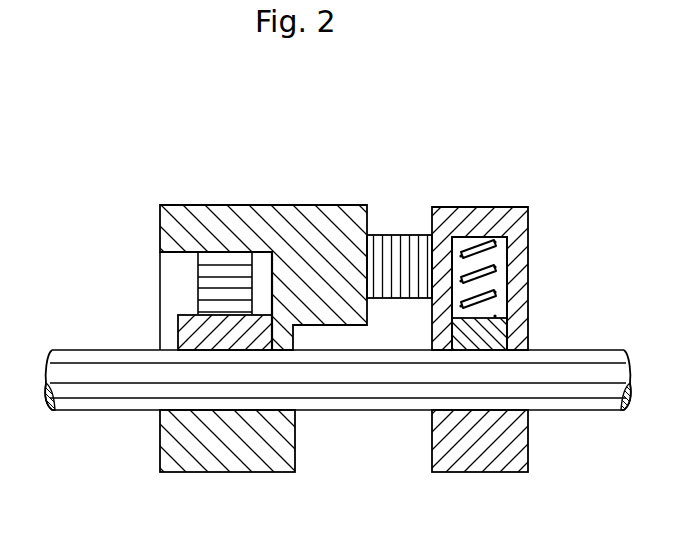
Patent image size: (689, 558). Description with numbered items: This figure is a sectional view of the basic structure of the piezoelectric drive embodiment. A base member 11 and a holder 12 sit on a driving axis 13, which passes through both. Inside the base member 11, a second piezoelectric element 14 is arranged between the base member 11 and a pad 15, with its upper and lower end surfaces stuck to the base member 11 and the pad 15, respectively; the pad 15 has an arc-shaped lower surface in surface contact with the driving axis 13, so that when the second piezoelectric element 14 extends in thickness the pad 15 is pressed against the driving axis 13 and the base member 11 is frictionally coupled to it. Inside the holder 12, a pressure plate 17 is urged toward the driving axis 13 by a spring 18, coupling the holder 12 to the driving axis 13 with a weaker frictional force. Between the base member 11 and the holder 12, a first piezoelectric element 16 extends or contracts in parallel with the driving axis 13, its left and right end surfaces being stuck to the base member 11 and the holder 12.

The base member 11 is at (298, 227).
The holder 12 is at (490, 222).
The driving axis 13 is at (108, 390).
The second piezoelectric element 14 is at (207, 278).
The pad 15 is at (187, 332).
The first piezoelectric element 16 is at (398, 238).
The pressure plate 17 is at (497, 333).
The spring 18 is at (503, 252).